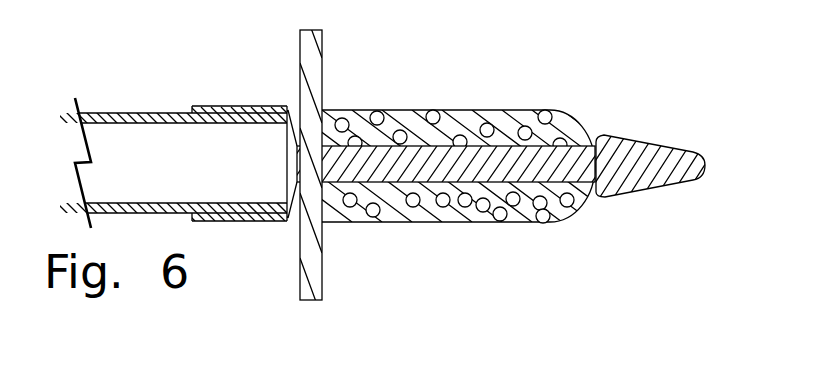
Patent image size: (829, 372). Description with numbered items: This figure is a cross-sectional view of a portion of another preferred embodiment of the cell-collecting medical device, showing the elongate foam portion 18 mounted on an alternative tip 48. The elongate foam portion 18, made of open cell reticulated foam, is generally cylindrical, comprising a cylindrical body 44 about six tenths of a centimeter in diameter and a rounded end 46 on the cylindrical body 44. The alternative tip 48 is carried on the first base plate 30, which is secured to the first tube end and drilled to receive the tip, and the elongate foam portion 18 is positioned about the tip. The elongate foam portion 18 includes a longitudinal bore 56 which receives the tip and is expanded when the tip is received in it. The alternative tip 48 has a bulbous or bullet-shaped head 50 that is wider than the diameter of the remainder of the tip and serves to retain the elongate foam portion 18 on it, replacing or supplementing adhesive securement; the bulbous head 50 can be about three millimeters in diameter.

The elongate foam portion 18 is at (500, 150).
The first base plate 30 is at (300, 85).
The cylindrical body 44 is at (480, 110).
The rounded end 46 is at (577, 118).
The alternative tip 48 is at (466, 208).
The bulbous head 50 is at (650, 140).
The longitudinal bore 56 is at (370, 145).